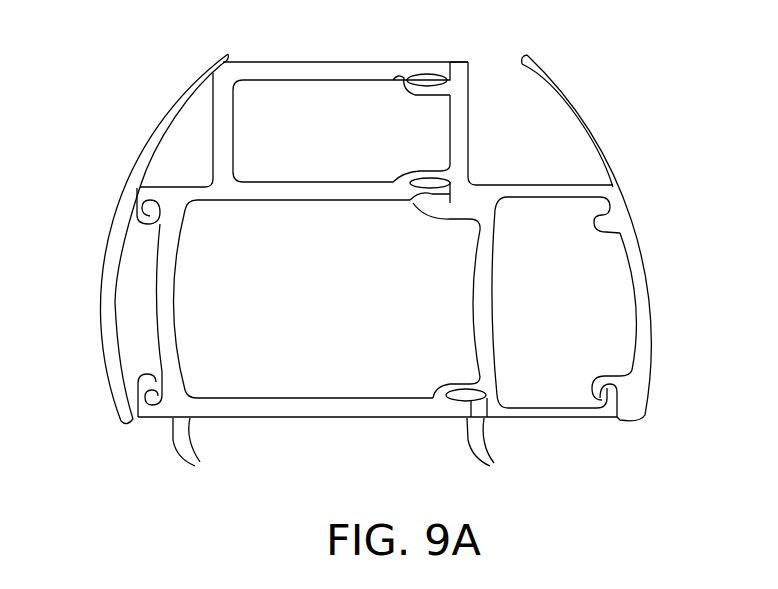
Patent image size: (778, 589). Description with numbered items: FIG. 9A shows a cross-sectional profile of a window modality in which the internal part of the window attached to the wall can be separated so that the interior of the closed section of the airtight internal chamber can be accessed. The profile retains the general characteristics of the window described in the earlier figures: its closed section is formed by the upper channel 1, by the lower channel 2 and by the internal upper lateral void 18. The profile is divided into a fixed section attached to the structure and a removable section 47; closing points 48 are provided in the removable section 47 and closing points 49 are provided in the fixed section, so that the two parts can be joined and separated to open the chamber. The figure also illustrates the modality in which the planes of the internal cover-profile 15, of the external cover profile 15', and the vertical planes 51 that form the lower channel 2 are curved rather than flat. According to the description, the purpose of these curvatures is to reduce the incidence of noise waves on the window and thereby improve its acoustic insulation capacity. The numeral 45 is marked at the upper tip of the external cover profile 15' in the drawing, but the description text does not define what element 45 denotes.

The upper channel 1 is at (338, 137).
The lower channel 2 is at (338, 333).
The internal cover-profile 15 is at (625, 238).
The external cover profile 15' is at (123, 239).
The internal upper lateral void 18 is at (558, 330).
The upper left wall tip 45 is at (224, 58).
The removable section 47 is at (458, 70).
The closing points 48 is at (550, 75).
The closing points 49 is at (400, 80).
The vertical planes 51 is at (155, 302).